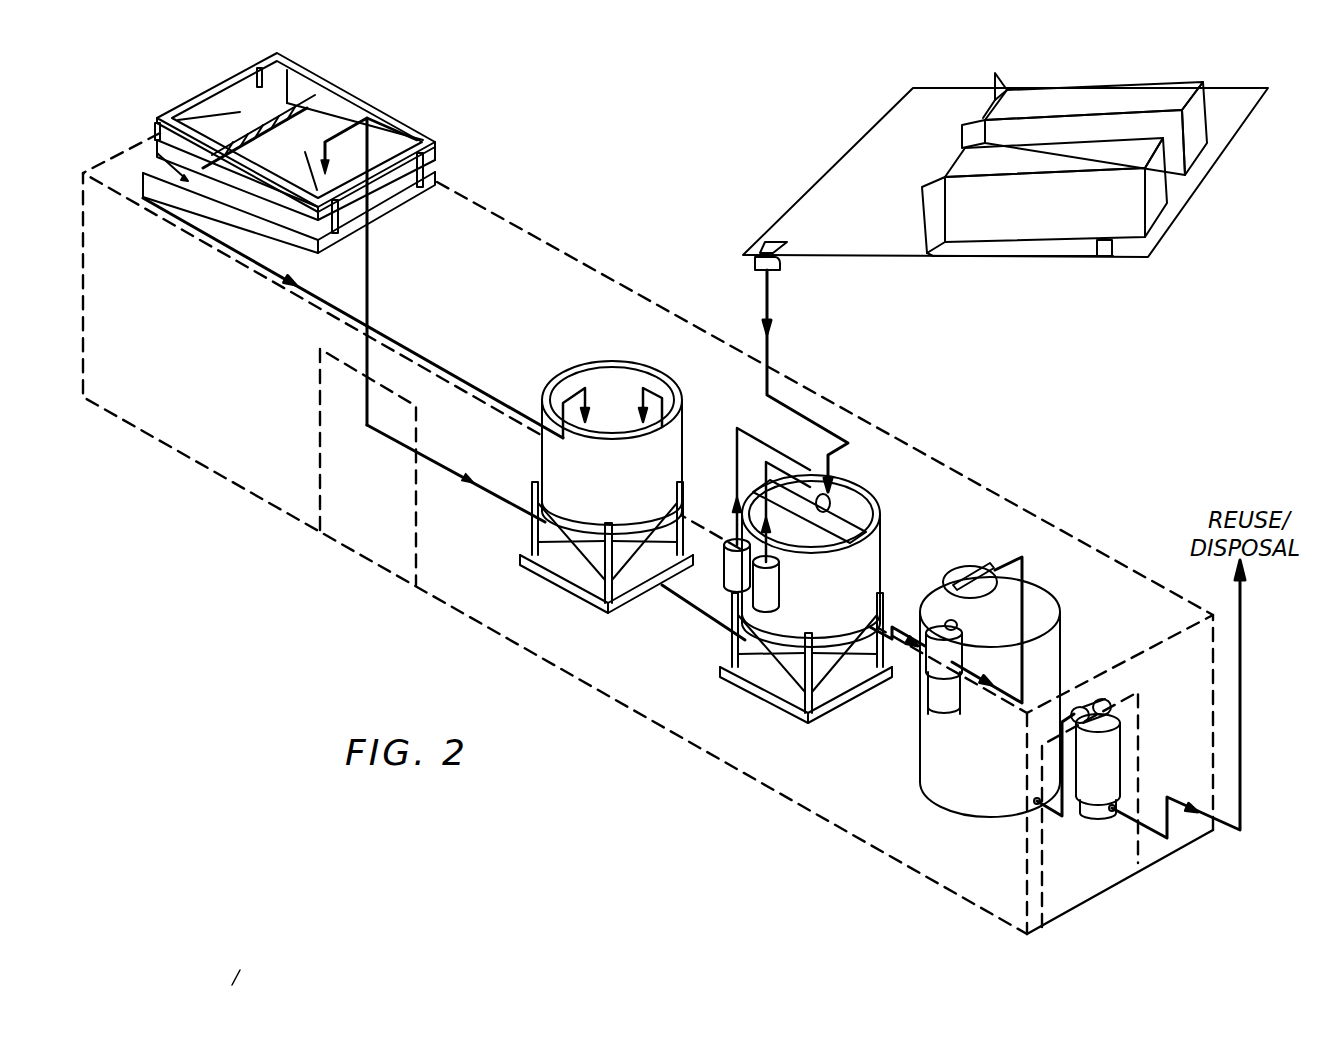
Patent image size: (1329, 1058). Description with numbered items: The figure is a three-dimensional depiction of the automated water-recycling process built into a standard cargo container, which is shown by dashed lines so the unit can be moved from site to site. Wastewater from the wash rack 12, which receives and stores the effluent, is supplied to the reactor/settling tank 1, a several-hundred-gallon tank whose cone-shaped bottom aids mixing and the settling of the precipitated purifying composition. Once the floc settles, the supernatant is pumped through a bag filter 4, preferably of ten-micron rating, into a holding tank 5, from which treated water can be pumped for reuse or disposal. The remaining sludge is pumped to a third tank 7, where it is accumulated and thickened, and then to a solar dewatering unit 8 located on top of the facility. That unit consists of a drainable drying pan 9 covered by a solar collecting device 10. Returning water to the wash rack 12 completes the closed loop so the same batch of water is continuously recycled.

The reactor/settling tank 1 is at (818, 607).
The bag filter 4 is at (917, 680).
The holding tank 5 is at (994, 770).
The third tank 7 is at (604, 489).
The solar dewatering unit 8 is at (369, 241).
The drainable drying pan 9 is at (207, 87).
The solar collecting device 10 is at (383, 208).
The wash rack 12 is at (1005, 171).